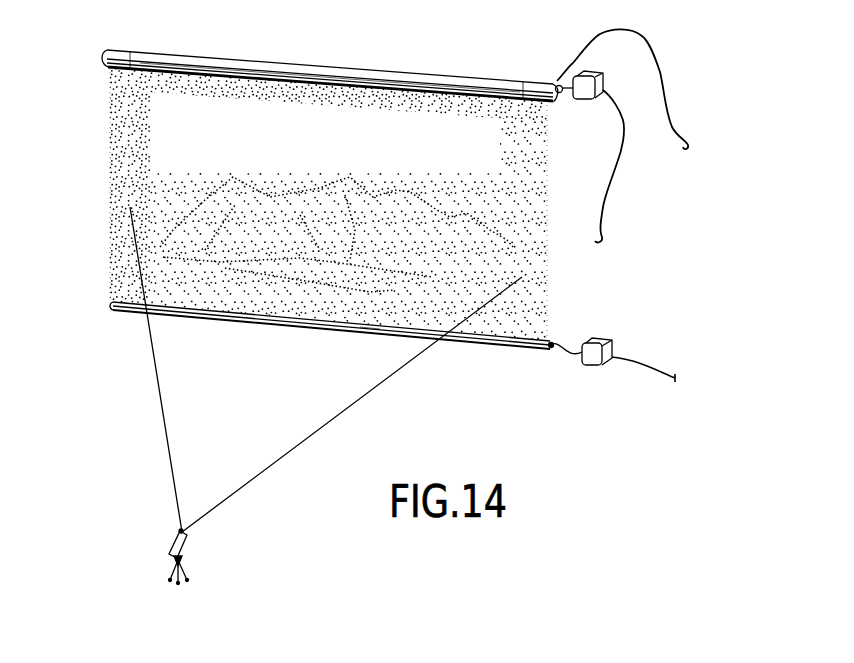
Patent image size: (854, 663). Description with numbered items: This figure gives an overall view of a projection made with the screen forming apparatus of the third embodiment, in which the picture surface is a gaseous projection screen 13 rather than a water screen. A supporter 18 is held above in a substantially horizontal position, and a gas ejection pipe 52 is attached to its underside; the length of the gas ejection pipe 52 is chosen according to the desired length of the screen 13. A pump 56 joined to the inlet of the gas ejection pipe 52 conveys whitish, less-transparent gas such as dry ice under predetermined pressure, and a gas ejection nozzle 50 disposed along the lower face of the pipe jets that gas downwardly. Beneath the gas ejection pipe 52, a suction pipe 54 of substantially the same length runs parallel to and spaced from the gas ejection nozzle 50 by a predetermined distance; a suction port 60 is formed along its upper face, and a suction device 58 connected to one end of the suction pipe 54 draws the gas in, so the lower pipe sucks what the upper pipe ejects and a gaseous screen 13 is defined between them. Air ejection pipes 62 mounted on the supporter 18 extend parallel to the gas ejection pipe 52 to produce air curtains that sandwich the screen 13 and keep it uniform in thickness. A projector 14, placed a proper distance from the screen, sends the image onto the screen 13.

The projection screen 13 is at (134, 188).
The projector 14 is at (172, 545).
The supporter 18 is at (447, 50).
The gas ejection nozzle 50 is at (122, 68).
The gas ejection pipe 52 is at (192, 67).
The suction pipe 54 is at (473, 345).
The pump 56 is at (600, 77).
The suction device 58 is at (597, 343).
The suction port 60 is at (373, 332).
The air ejection pipe 62 is at (270, 67).